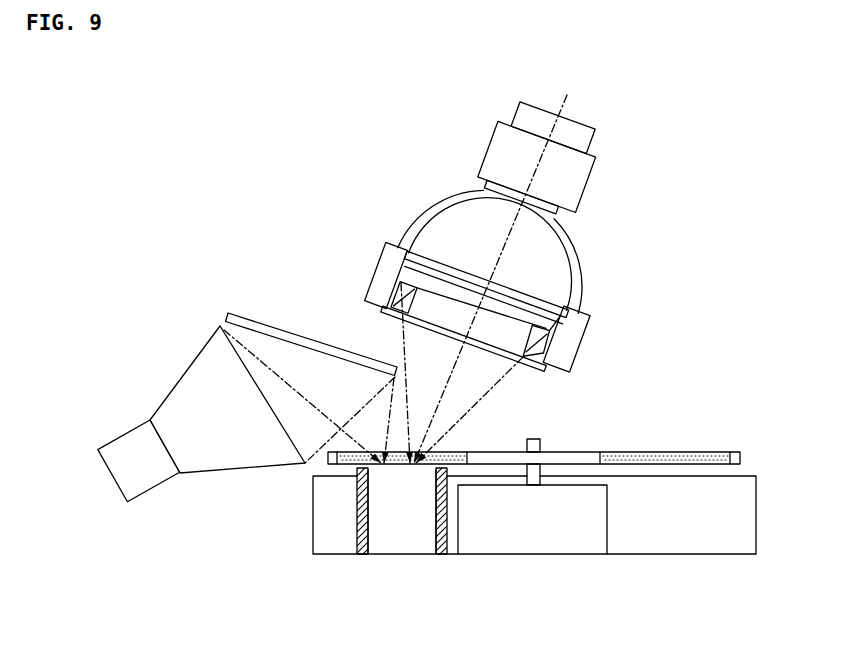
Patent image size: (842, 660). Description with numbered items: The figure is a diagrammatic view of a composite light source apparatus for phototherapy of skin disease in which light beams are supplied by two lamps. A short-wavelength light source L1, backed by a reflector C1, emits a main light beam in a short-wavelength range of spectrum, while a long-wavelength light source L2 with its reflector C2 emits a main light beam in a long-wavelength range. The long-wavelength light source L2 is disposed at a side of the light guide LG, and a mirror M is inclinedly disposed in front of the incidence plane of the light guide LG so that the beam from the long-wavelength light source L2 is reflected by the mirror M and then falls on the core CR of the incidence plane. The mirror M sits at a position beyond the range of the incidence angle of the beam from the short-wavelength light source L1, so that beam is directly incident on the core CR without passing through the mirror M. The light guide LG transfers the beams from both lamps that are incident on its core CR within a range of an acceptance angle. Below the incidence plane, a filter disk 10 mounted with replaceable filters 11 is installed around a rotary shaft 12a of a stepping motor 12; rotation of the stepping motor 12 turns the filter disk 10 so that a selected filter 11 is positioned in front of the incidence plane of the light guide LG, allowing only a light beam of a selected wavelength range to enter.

The lamp L1 is at (597, 176).
The reflector C1 is at (577, 255).
The mirror M is at (292, 333).
The reflector C2 is at (190, 369).
The lamp L2 is at (117, 436).
The replaceable filter 11 is at (447, 456).
The rotary shaft 12a is at (541, 440).
The filter disk 10 is at (741, 454).
The stepping motor 12 is at (607, 520).
The light guide LG is at (357, 518).
The core CR is at (406, 517).